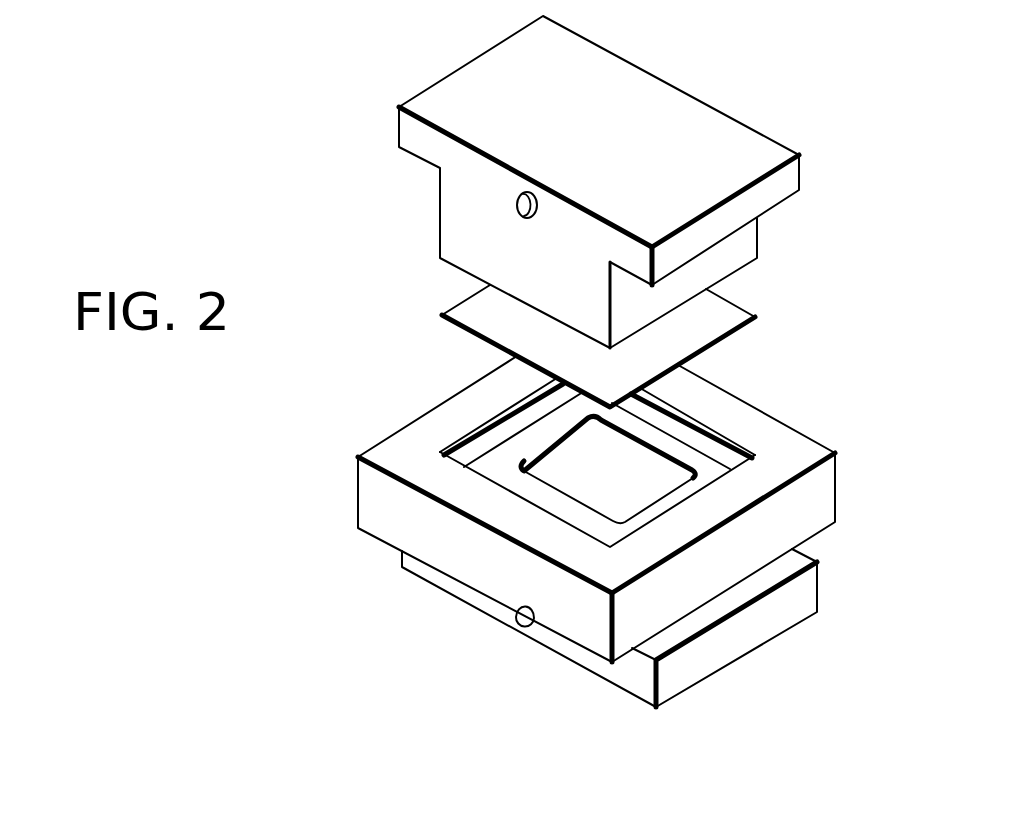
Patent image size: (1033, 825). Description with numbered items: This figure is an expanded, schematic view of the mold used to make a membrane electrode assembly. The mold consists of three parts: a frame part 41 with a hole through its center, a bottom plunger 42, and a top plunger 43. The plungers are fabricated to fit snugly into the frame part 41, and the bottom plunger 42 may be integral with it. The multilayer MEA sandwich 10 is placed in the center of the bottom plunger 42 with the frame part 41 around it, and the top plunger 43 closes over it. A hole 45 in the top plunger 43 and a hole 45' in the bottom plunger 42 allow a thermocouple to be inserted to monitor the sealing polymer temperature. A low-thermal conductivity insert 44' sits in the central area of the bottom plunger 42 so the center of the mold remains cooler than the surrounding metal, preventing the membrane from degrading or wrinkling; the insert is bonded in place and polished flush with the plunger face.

The top plunger 43 is at (518, 52).
The hole 45 is at (457, 196).
The multilayer MEA sandwich 10 is at (465, 313).
The frame part 41 is at (395, 452).
The low-thermal conductivity insert 44' is at (659, 440).
The bottom plunger 42 is at (745, 632).
The hole 45' is at (485, 633).